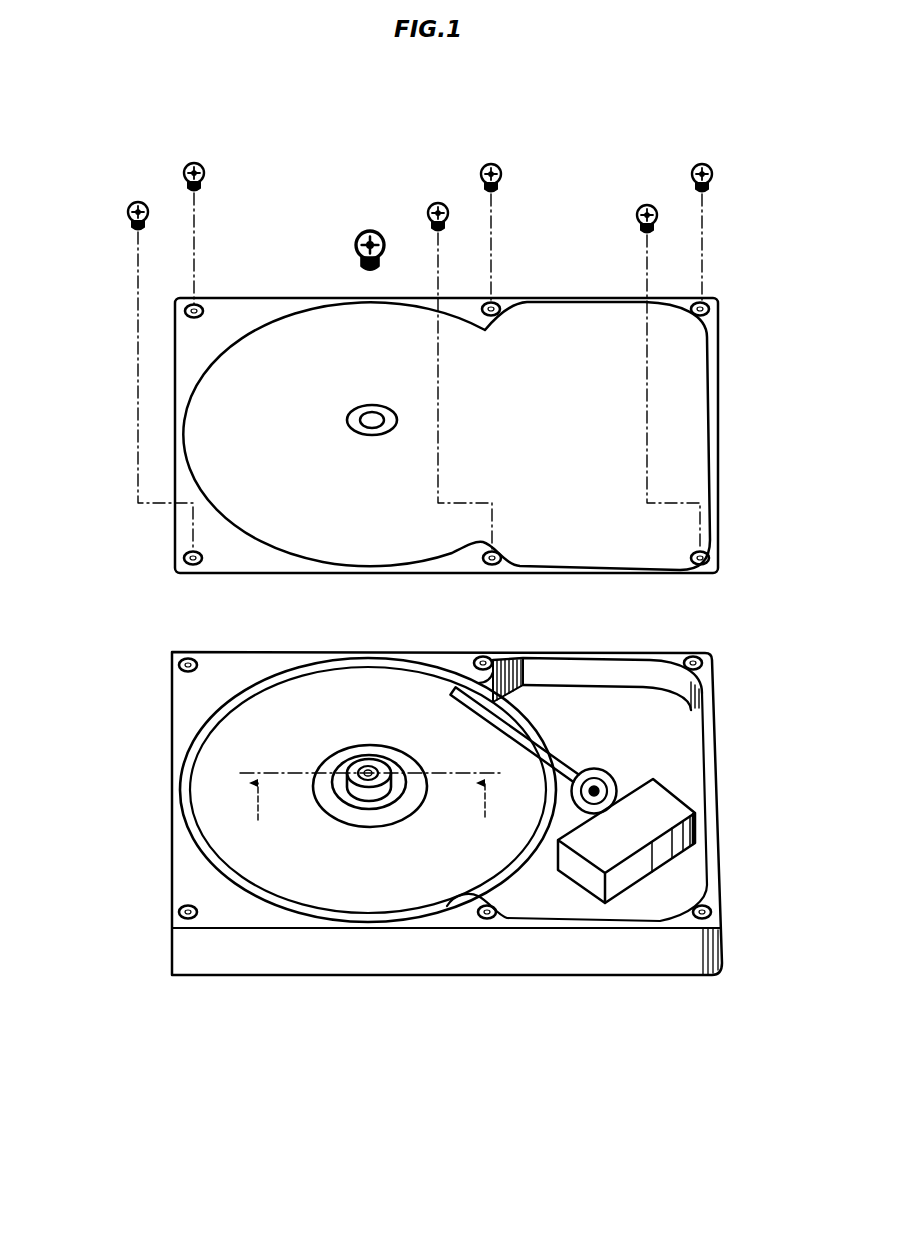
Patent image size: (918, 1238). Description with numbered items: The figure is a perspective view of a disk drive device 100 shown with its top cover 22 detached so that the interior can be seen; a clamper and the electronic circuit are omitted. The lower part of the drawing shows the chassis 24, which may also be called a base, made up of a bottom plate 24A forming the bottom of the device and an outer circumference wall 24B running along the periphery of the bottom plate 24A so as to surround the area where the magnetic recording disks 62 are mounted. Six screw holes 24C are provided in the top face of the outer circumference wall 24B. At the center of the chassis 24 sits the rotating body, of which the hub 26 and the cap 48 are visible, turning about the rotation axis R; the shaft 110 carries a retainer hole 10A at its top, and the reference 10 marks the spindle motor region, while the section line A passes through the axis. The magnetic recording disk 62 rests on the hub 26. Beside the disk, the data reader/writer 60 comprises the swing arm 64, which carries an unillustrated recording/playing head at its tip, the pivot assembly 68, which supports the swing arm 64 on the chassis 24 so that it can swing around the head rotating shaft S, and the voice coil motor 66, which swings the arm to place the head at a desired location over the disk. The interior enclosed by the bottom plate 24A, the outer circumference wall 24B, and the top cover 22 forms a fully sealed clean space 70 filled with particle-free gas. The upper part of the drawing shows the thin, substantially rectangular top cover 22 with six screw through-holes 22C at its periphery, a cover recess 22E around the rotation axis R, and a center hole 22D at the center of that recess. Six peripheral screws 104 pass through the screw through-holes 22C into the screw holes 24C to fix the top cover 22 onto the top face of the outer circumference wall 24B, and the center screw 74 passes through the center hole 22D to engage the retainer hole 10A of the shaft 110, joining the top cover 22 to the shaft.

The disk drive device 100 is at (455, 816).
The spindle motor 10 is at (373, 771).
The retainer hole 10A is at (367, 768).
The shaft 110 is at (380, 763).
The top cover 22 is at (688, 383).
The screw through-holes 22C is at (200, 306).
The center hole 22D is at (380, 432).
The cover recess 22E is at (354, 433).
The chassis 24 is at (587, 947).
The bottom plate 24A is at (652, 750).
The outer circumference wall 24B is at (708, 737).
The screw holes 24C is at (177, 667).
The hub 26 is at (323, 797).
The cap 48 is at (337, 782).
The data reader/writer 60 is at (638, 795).
The magnetic recording disks 62 is at (263, 723).
The swing arm 64 is at (532, 745).
The pivot assembly 68 is at (610, 790).
The voice coil motor 66 is at (630, 832).
The clean space 70 is at (573, 713).
The center screw 74 is at (356, 243).
The peripheral screws 104 is at (128, 210).
The rotation axis R is at (368, 765).
The head rotating shaft S is at (592, 801).
The section line A- A is at (371, 809).